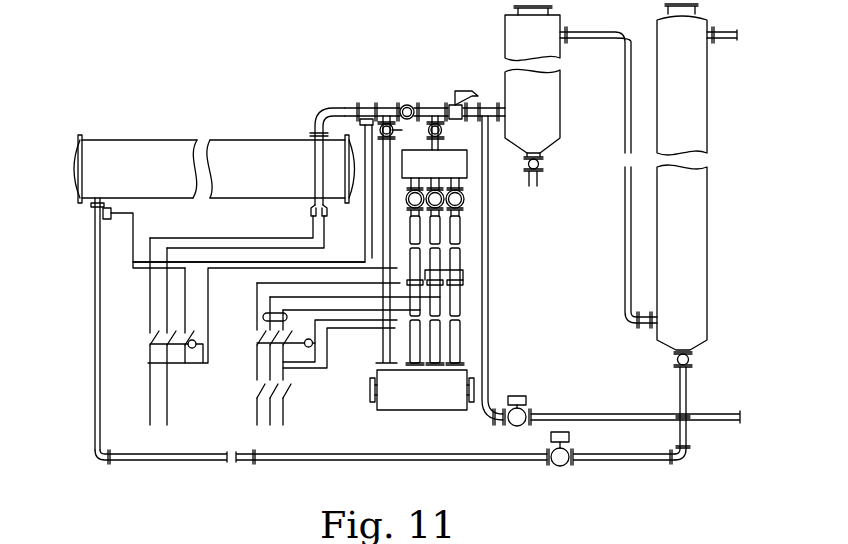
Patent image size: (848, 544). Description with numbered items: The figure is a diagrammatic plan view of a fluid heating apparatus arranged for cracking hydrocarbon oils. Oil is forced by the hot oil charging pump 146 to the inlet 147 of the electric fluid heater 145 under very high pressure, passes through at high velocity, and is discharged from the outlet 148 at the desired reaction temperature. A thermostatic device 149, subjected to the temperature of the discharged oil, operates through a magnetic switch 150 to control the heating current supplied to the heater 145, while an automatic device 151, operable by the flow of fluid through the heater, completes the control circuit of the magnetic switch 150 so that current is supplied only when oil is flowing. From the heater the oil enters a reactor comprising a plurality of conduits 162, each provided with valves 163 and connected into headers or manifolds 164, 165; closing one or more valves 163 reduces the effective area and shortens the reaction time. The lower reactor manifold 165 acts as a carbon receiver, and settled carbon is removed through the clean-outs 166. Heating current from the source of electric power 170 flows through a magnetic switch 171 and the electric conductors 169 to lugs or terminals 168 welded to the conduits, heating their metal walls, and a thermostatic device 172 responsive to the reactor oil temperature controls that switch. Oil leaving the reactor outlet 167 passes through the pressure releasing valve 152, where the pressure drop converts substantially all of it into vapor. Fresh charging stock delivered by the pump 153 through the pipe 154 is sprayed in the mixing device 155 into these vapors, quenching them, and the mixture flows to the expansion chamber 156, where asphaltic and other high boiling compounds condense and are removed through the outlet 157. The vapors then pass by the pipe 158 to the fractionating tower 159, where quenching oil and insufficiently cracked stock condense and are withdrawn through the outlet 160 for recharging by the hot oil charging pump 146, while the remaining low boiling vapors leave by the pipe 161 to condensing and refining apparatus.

The electric fluid heater 145 is at (142, 142).
The hot oil charging pump 146 is at (565, 466).
The inlet 147 is at (90, 212).
The outlet 148 is at (340, 133).
The thermostatic device 149 is at (350, 115).
The magnetic switch 150 is at (148, 345).
The automatic device 151 is at (98, 228).
The pressure releasing valve 152 is at (505, 110).
The pump 153 is at (527, 404).
The pipe 154 is at (487, 346).
The mixing device 155 is at (477, 127).
The expansion chamber 156 is at (505, 33).
The outlet 157 is at (543, 162).
The pipe 158 is at (603, 8).
The fractionating tower 159 is at (703, 113).
The outlet 160 is at (689, 353).
The pipe 161 is at (722, 28).
The conduits 162 is at (445, 230).
The valves 163 is at (462, 200).
The header 164 is at (470, 166).
The lower reactor manifold 165 is at (433, 412).
The clean-outs 166 is at (477, 388).
The reactor outlet 167 is at (438, 146).
The lugs or terminals 168 is at (463, 283).
The electric conductors 169 is at (265, 317).
The source of electric power 170 is at (287, 425).
The magnetic switch 171 is at (257, 343).
The thermostatic device 172 is at (390, 206).